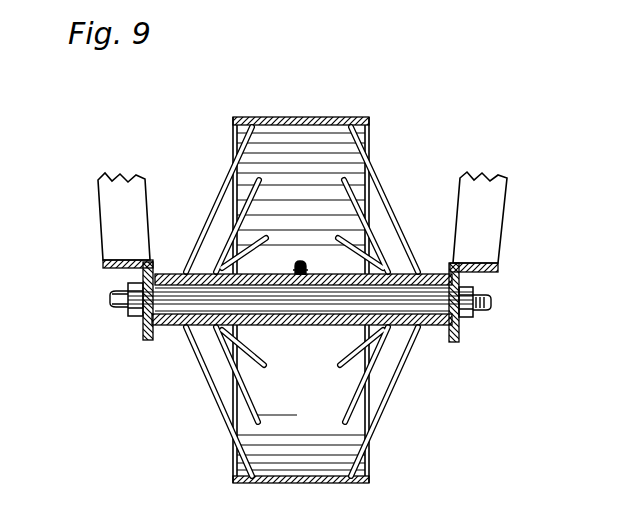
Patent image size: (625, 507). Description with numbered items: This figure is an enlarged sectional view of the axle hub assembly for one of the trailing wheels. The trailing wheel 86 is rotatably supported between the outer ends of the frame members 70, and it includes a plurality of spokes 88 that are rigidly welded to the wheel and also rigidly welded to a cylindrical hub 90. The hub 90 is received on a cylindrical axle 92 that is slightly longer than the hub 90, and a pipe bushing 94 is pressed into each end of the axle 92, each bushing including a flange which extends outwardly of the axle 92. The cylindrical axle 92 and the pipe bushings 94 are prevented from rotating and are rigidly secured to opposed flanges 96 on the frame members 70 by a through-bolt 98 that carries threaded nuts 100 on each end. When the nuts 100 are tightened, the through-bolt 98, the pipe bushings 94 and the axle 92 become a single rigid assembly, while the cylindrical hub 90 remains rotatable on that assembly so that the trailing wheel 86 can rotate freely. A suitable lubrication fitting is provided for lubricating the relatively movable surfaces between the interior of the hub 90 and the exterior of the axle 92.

The frame member 70 is at (112, 195).
The trailing wheel 86 is at (299, 119).
The spokes 88 is at (378, 187).
The cylindrical hub 90 is at (268, 275).
The cylindrical axle 92 is at (324, 290).
The pipe bushing 94 is at (450, 269).
The flanges 96 is at (453, 342).
The through-bolt 98 is at (180, 328).
The threaded nuts 100 is at (128, 316).